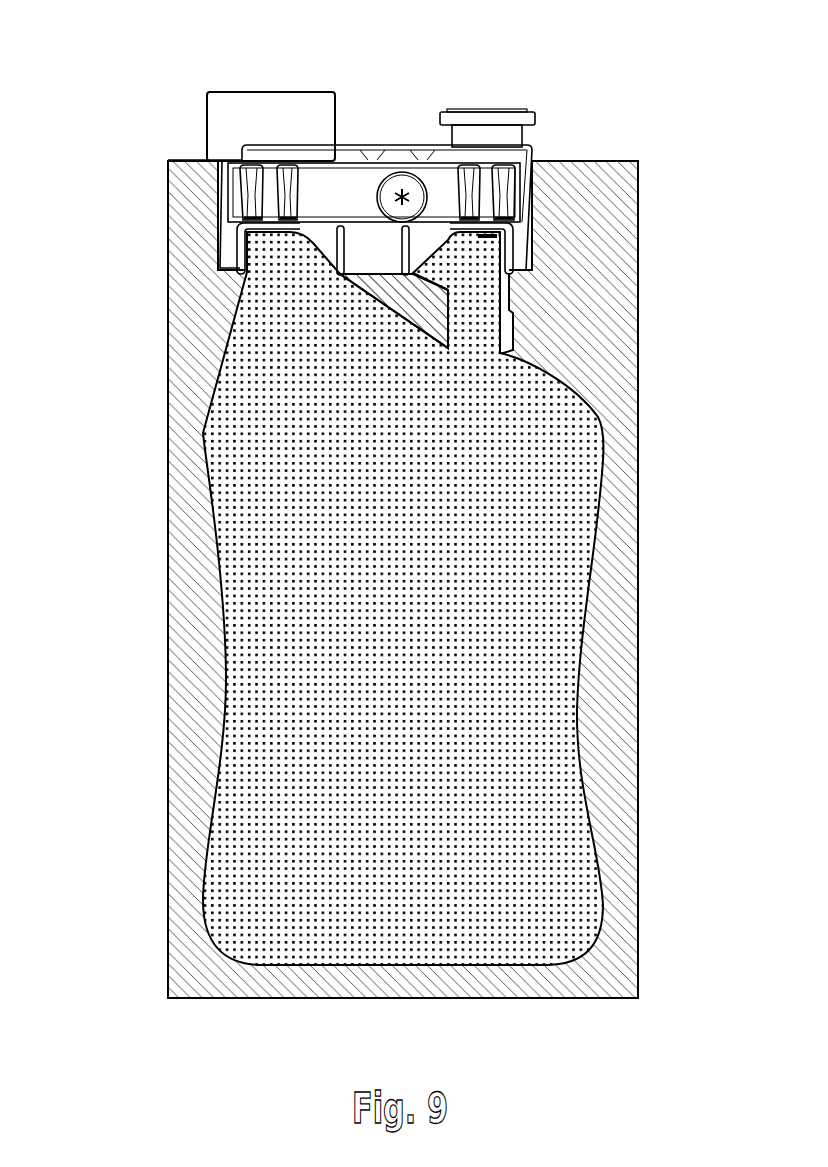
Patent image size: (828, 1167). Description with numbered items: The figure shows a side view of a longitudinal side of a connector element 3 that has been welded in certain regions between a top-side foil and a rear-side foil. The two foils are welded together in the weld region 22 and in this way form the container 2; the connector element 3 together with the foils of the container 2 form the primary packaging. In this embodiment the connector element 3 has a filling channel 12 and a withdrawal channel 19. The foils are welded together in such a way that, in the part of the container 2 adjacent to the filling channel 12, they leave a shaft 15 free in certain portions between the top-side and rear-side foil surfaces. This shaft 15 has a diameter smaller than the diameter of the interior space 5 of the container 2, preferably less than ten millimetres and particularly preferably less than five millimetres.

The container 2 is at (146, 580).
The connector element 3 is at (394, 98).
The interior space 5 is at (240, 433).
The filling channel 12 is at (487, 178).
The shaft 15 is at (513, 312).
The withdrawal channel 19 is at (268, 185).
The weld region 22 is at (215, 297).